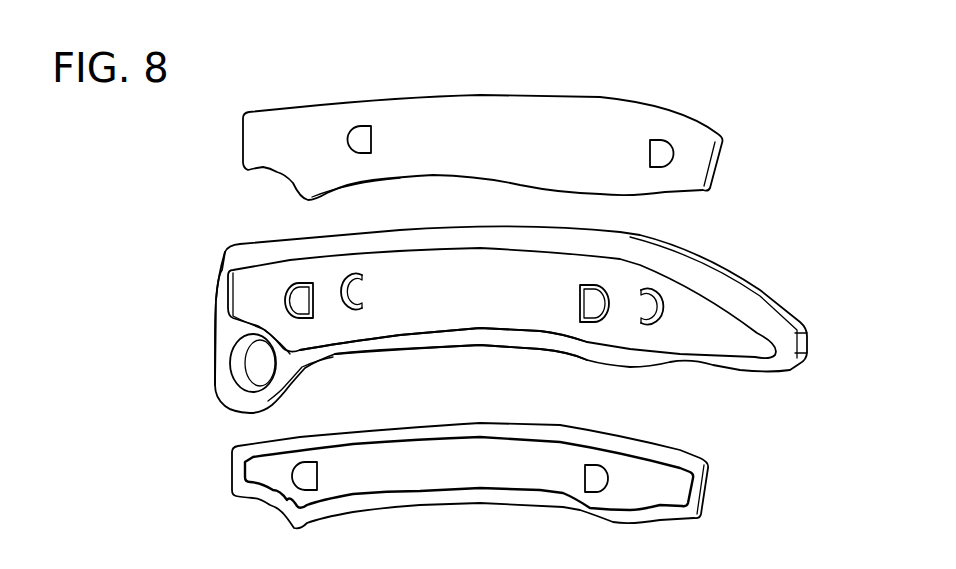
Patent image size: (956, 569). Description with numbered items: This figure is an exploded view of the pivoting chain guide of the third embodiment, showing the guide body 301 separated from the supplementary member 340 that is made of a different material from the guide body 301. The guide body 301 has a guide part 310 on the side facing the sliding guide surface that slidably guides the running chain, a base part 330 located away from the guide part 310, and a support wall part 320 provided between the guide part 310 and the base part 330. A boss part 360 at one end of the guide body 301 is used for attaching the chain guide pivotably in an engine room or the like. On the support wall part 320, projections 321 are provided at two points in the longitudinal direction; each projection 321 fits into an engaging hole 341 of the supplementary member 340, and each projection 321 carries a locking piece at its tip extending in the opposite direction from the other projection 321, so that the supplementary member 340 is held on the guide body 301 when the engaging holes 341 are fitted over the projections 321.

The guide body 301 is at (210, 322).
The guide part 310 is at (412, 237).
The support wall part 320 is at (447, 304).
The projection 321 is at (290, 300).
The base part 330 is at (517, 342).
The supplementary member 340 is at (457, 118).
The engaging hole 341 is at (353, 133).
The boss part 360 is at (222, 378).